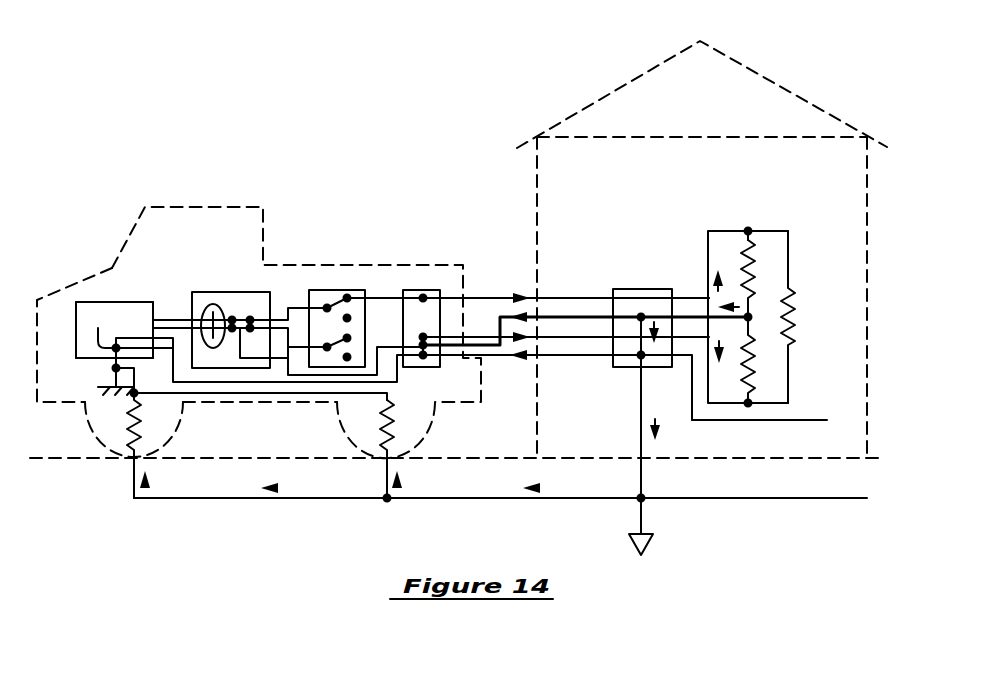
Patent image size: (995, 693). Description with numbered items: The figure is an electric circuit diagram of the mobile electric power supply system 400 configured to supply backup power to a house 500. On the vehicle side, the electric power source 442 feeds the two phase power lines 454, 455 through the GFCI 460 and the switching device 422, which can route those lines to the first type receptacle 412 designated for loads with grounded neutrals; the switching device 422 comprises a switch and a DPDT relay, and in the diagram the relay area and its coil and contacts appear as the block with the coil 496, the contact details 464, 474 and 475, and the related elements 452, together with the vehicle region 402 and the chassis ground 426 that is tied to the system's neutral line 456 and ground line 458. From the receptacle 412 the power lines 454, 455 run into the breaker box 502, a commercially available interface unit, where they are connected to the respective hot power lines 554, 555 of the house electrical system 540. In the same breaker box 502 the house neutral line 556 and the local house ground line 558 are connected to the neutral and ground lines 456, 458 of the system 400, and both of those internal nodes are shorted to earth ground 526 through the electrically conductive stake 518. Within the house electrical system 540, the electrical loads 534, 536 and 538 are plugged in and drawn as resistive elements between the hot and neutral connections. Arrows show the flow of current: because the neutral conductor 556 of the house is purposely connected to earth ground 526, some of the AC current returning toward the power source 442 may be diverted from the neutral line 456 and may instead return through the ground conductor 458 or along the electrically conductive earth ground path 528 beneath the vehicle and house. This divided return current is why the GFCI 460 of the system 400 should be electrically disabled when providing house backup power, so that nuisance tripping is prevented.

The mobile electric power supply system 400 is at (422, 232).
The vehicle 402 is at (68, 282).
The first type receptacle 412 is at (420, 290).
The switching device 422 is at (358, 290).
The vehicle ground 426 is at (116, 368).
The electric power source 442 is at (115, 302).
The controller circuit 452 is at (114, 330).
The first hot power line 454 is at (163, 319).
The second hot power line 455 is at (178, 327).
The neutral line 456 is at (232, 318).
The ground line 458 is at (151, 445).
The GFCI 460 is at (250, 318).
The switch 464 is at (329, 304).
The relay contact line 474 is at (250, 326).
The return line 475 is at (240, 359).
The relay coil 496 is at (211, 304).
The house 500 is at (566, 108).
The breaker box 502 is at (640, 289).
The electrically conductive stake 518 is at (642, 427).
The earth ground 526 is at (647, 532).
The earth ground path 528 is at (452, 499).
The electrical load 534 is at (752, 262).
The electrical load 536 is at (791, 305).
The electrical load 538 is at (752, 366).
The house electrical system 540 is at (694, 219).
The house hot power line 554 is at (726, 231).
The house hot power line 555 is at (692, 397).
The house neutral line 556 is at (686, 316).
The local house ground line 558 is at (743, 422).